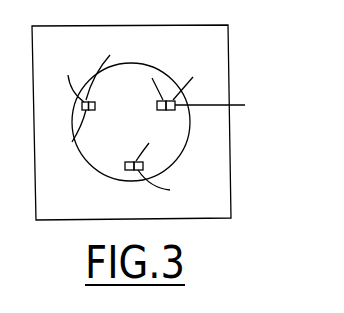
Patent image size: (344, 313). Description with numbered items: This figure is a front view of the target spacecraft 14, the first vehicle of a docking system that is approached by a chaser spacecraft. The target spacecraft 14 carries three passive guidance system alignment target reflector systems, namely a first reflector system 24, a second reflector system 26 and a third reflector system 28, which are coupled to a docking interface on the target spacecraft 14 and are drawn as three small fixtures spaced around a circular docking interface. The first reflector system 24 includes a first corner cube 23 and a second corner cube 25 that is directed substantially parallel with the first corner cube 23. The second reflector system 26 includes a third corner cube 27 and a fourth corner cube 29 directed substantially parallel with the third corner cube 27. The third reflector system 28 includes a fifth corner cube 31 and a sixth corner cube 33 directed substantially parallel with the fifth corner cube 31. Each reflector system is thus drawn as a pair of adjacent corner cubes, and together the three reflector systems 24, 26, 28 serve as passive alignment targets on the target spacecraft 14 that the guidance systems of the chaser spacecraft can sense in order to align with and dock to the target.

The target spacecraft 14 is at (228, 82).
The first corner cube 23 is at (131, 161).
The first reflector system 24 is at (173, 188).
The second corner cube 25 is at (160, 141).
The second reflector system 26 is at (72, 77).
The third corner cube 27 is at (112, 70).
The third reflector system 28 is at (188, 78).
The fourth corner cube 29 is at (63, 134).
The fifth corner cube 31 is at (147, 89).
The sixth corner cube 33 is at (230, 106).